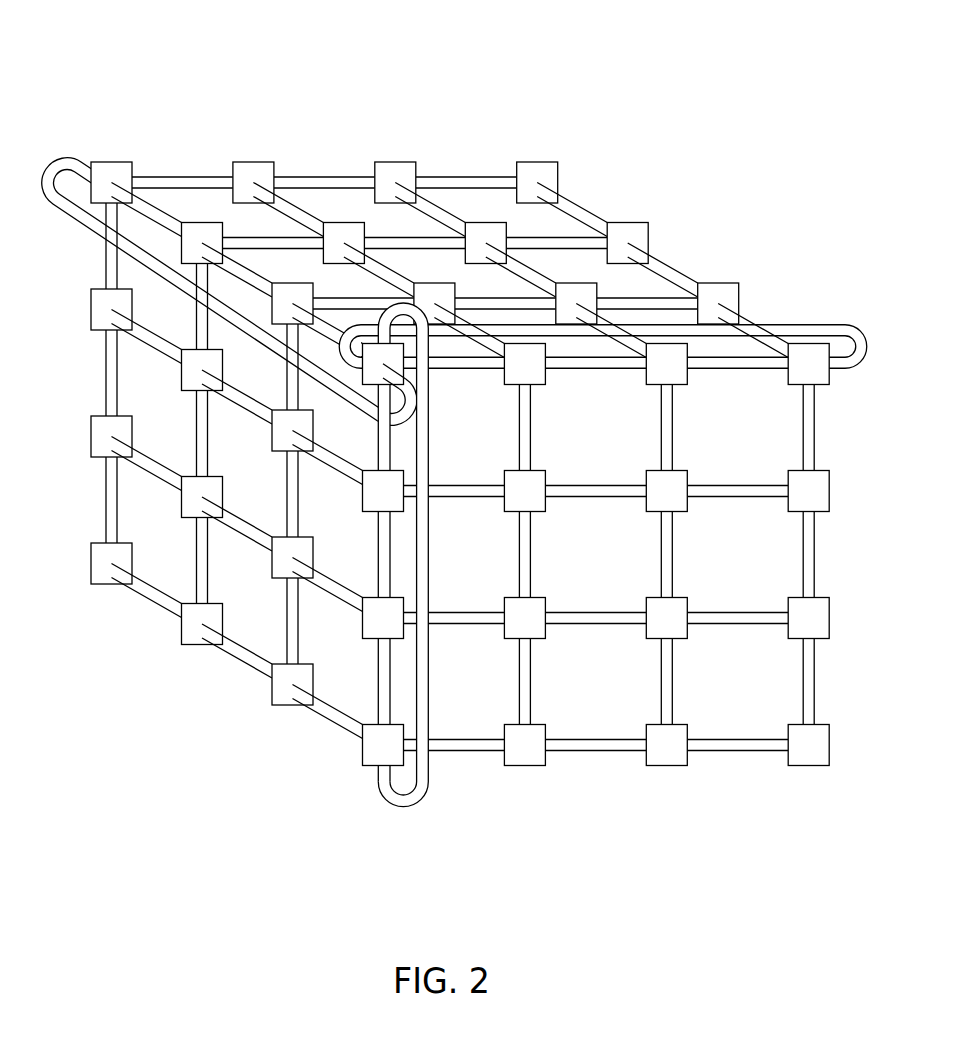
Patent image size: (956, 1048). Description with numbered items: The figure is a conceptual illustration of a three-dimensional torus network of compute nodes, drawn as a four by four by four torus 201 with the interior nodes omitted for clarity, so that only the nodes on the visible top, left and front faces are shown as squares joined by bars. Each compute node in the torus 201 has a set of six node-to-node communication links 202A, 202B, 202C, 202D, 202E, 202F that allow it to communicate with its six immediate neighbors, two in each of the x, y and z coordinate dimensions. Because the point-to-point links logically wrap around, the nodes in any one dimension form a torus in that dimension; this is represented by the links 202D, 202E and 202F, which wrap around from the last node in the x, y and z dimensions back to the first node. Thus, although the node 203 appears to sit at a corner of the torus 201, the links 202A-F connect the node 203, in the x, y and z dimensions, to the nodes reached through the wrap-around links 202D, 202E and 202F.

The torus 201 is at (454, 438).
The node-to-node communication link 202A is at (450, 369).
The node-to-node communication link 202B is at (390, 449).
The node-to-node communication link 202C is at (341, 333).
The node-to-node communication link 202D is at (832, 325).
The node-to-node communication link 202E is at (402, 807).
The node-to-node communication link 202F is at (57, 158).
The node 203 is at (364, 378).